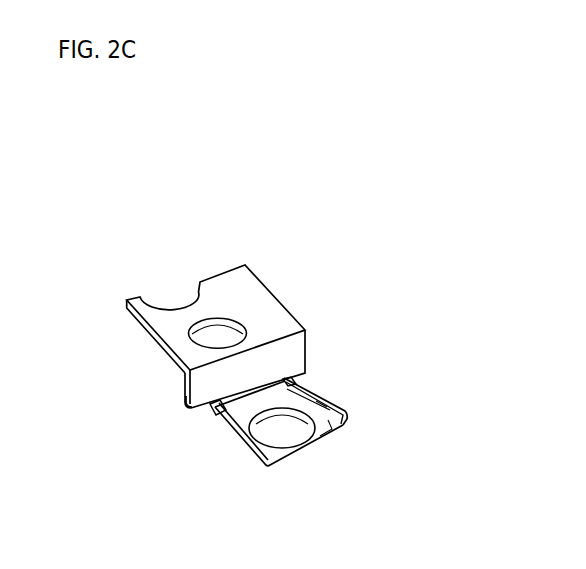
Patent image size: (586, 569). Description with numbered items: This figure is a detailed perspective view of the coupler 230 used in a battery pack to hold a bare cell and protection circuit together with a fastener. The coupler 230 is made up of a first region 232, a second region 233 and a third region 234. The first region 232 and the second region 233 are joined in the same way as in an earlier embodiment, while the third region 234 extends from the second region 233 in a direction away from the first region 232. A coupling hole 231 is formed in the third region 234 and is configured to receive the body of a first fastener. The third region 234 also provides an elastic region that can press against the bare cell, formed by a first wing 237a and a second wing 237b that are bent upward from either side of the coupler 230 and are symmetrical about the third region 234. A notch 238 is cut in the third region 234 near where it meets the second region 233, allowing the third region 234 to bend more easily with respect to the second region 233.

The coupler 230 is at (109, 183).
The coupling hole 231 is at (283, 428).
The first region 232 is at (257, 303).
The second region 233 is at (287, 349).
The third region 234 is at (341, 433).
The first wing 237a is at (212, 425).
The second wing 237b is at (297, 386).
The notch 238 is at (297, 377).